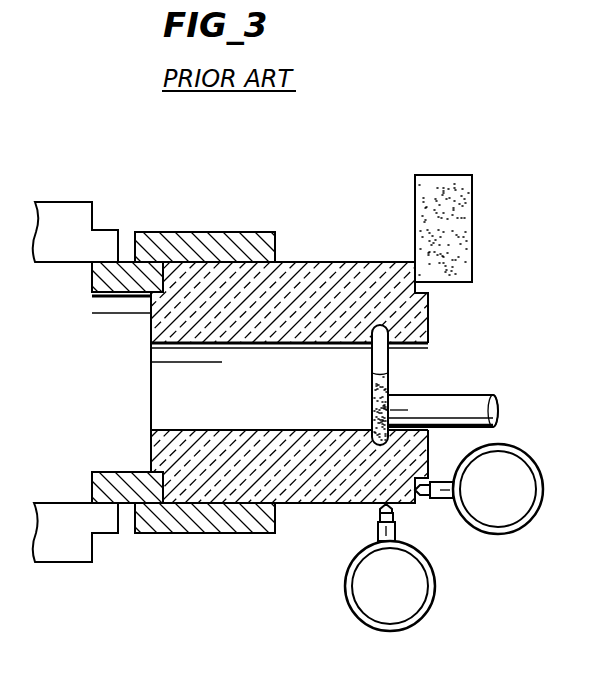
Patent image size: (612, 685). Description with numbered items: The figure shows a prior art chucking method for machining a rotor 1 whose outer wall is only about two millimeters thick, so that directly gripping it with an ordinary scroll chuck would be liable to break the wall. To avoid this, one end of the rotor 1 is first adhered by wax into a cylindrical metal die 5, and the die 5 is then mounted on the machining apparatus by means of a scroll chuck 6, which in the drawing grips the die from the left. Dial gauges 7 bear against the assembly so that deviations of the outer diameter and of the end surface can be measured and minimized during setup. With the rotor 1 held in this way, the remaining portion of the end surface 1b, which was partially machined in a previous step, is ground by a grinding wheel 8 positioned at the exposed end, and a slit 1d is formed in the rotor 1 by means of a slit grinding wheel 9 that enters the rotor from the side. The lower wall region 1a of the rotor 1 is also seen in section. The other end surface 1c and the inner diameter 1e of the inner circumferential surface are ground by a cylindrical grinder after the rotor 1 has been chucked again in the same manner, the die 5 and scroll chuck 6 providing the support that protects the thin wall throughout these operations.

The rotor 1 is at (341, 262).
The bottom wall of mold body 1a is at (300, 504).
The end surface 1b is at (418, 286).
The other end surface 1c is at (154, 492).
The slit 1d is at (371, 452).
The inner diameter 1e is at (290, 430).
The cylindrical metal die 5 is at (261, 232).
The scroll chuck 6 is at (74, 562).
The dial gauges 7 is at (430, 566).
The grinding wheel 8 is at (462, 215).
The slit grinding wheel 9 is at (467, 395).